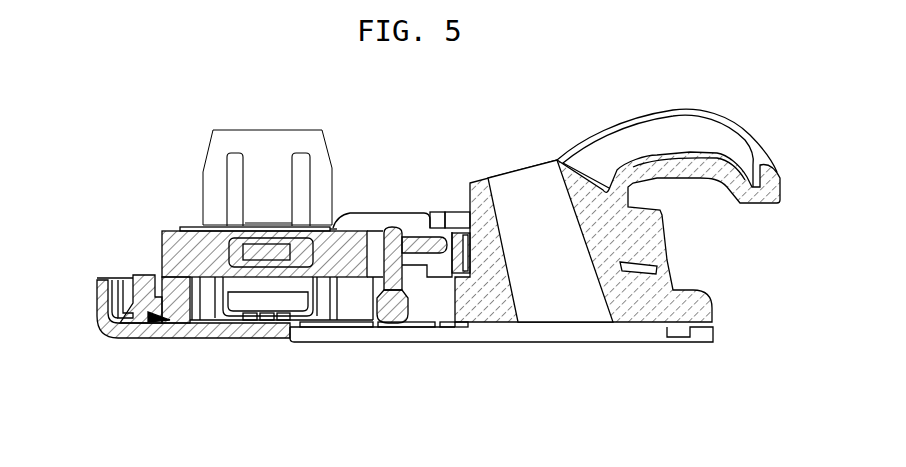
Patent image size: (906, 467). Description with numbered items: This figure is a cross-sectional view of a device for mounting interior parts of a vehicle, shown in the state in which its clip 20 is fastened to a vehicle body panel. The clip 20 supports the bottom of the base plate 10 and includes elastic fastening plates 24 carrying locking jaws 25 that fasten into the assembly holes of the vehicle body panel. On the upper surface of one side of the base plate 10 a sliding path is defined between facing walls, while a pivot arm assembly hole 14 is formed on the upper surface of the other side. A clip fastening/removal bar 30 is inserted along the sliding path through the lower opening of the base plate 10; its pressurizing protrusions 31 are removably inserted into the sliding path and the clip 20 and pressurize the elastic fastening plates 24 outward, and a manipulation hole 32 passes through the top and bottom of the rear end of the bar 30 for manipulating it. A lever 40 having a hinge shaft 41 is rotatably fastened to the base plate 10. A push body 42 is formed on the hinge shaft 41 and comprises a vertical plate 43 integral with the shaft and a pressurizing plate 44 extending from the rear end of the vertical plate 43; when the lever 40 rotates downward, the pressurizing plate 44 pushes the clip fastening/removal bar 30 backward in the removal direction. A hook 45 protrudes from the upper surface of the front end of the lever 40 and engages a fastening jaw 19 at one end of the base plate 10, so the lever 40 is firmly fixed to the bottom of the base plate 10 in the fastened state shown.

The base plate 10 is at (473, 346).
The pivot arm assembly hole 14 is at (537, 182).
The fastening jaw 19 is at (144, 314).
The clip 20 is at (205, 142).
The elastic fastening plates 24 is at (256, 185).
The locking jaws 25 is at (268, 227).
The clip fastening/removal bar 30 is at (162, 232).
The pressurizing protrusions 31 is at (248, 262).
The manipulation hole 32 is at (373, 236).
The lever 40 is at (115, 335).
The hinge shaft 41 is at (393, 307).
The push body 42 is at (440, 141).
The vertical plate 43 is at (392, 228).
The pressurizing plate 44 is at (435, 243).
The hook 45 is at (143, 282).